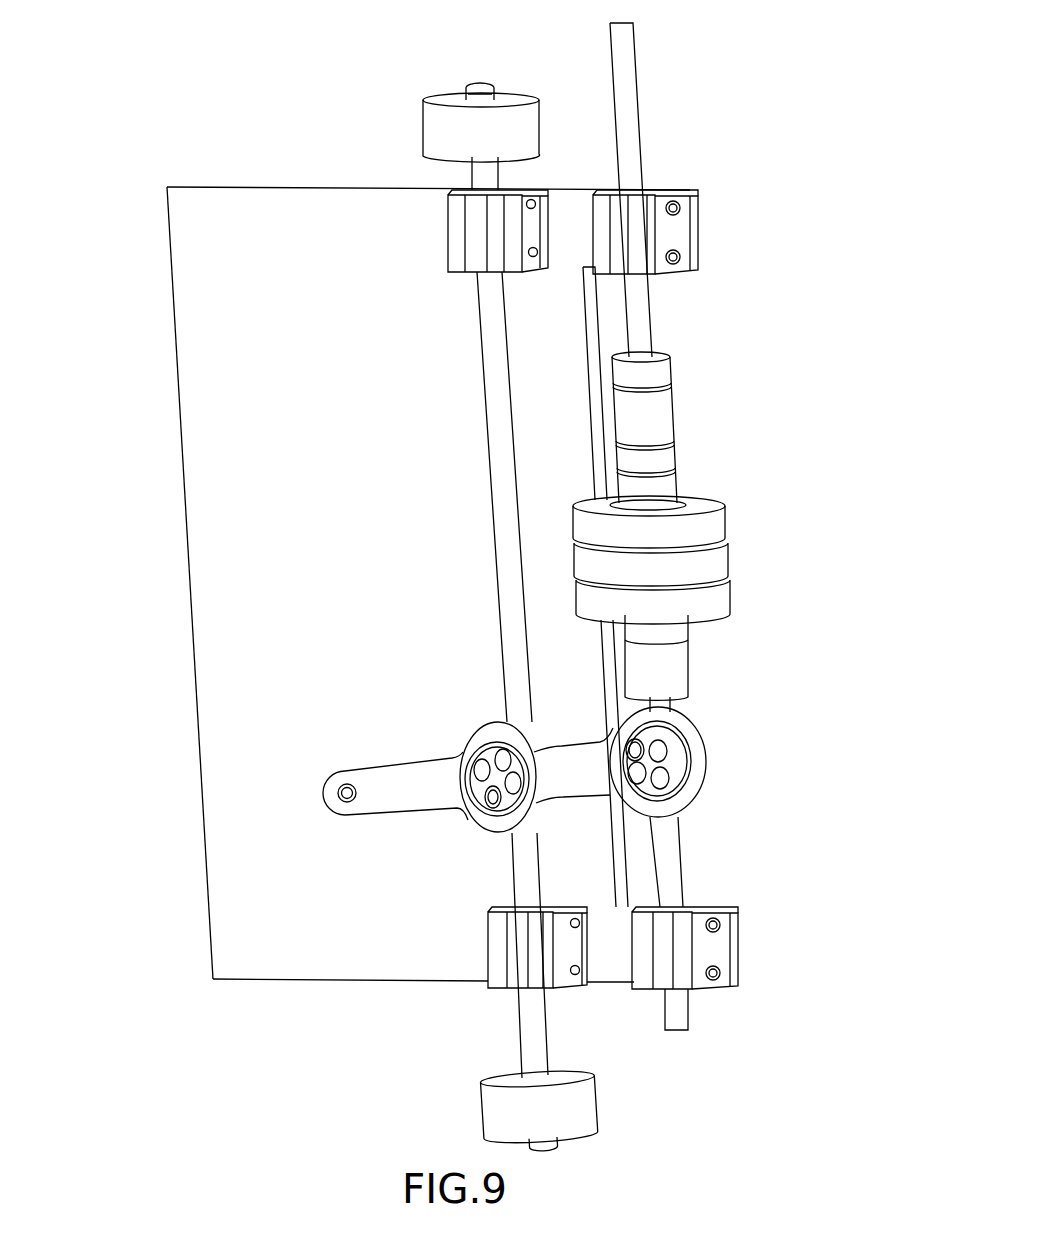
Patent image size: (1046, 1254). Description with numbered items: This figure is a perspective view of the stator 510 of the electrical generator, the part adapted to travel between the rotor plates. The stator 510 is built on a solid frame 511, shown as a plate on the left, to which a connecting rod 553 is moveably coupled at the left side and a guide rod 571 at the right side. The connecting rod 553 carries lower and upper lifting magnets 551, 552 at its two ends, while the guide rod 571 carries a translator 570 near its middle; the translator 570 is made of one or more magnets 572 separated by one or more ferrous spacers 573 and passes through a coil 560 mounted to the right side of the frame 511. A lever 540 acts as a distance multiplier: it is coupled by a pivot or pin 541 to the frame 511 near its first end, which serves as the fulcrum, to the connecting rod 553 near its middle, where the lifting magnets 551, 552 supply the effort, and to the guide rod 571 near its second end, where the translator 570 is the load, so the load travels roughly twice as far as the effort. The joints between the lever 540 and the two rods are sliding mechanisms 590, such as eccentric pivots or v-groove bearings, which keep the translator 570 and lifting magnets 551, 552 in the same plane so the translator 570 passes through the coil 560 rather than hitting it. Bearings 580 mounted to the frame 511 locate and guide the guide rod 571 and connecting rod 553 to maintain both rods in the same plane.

The stator 510 is at (222, 308).
The frame 511 is at (237, 392).
The lever 540 is at (412, 802).
The pin 541 is at (345, 797).
The lower lifting magnet 551 is at (443, 135).
The upper lifting magnet 552 is at (493, 1115).
The connecting rod 553 is at (500, 527).
The coil 560 is at (725, 512).
The translator 570 is at (680, 410).
The guide rod 571 is at (628, 93).
The magnet 572 is at (668, 370).
The ferrous spacer 573 is at (668, 427).
The bearing 580 is at (513, 210).
The sliding mechanism 590 is at (708, 765).